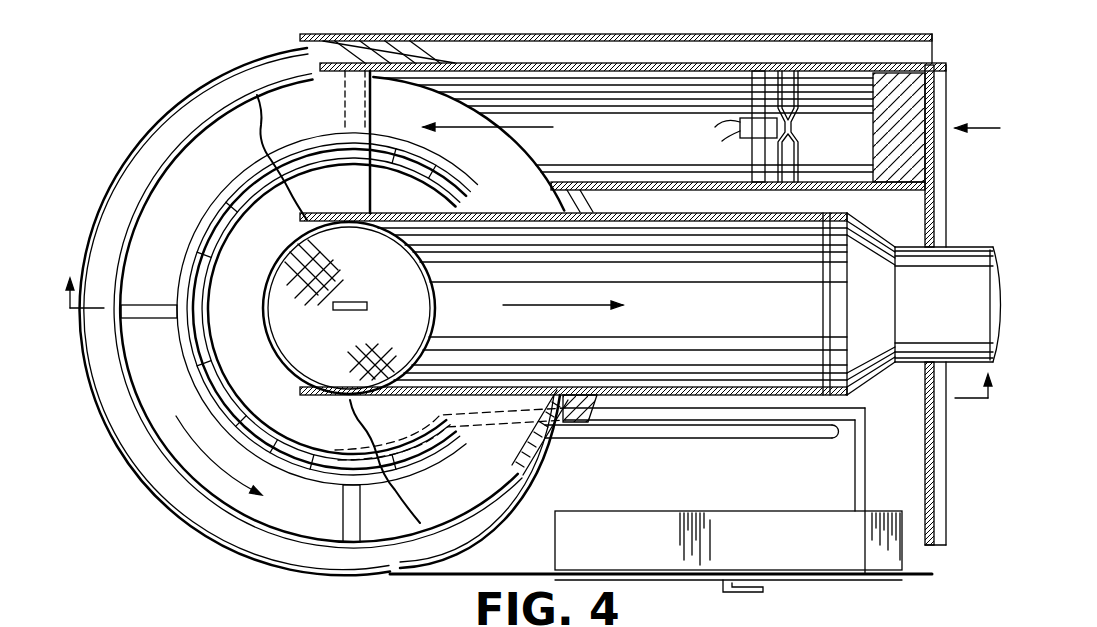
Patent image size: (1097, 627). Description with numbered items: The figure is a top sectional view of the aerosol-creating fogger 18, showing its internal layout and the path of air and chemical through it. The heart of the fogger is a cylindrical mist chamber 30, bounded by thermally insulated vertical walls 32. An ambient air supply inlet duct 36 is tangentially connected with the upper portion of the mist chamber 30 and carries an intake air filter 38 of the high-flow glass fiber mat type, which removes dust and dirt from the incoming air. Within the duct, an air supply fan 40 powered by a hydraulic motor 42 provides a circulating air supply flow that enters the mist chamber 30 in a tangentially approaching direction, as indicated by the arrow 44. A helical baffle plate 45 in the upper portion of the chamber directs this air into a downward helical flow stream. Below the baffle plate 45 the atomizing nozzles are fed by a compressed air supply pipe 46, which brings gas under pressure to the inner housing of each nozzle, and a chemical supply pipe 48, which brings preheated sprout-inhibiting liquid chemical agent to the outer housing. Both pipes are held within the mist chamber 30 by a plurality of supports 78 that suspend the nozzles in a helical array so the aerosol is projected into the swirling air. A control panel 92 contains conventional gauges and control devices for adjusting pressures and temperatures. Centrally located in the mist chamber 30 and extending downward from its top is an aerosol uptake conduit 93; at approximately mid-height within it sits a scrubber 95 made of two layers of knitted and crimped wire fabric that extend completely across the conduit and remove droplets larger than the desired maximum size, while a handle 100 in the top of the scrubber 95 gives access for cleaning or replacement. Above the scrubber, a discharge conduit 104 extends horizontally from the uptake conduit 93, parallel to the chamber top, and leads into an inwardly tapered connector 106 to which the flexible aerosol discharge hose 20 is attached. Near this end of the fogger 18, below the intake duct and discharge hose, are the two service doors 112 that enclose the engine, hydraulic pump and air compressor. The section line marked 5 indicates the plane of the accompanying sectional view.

The fogger 18 is at (226, 547).
The flexible aerosol discharge hose 20 is at (963, 267).
The mist chamber 30 is at (200, 177).
The thermally insulated vertical walls 32 is at (190, 107).
The ambient air supply inlet duct 36 is at (600, 144).
The intake air filter 38 is at (920, 108).
The air supply fan 40 is at (790, 95).
The hydraulic motor 42 is at (745, 122).
The arrow 44 is at (523, 126).
The helical baffle plate 45 is at (290, 103).
The compressed air supply pipe 46 is at (193, 237).
The chemical supply pipe 48 is at (210, 350).
The supports 78 is at (342, 92).
The control panel 92 is at (805, 553).
The aerosol uptake conduit 93 is at (433, 297).
The scrubber 95 is at (376, 276).
The handle 100 is at (355, 312).
The discharge conduit 104 is at (648, 337).
The inwardly tapered connector 106 is at (867, 253).
The service doors 112 is at (935, 148).
The section line 5- 5 is at (529, 351).